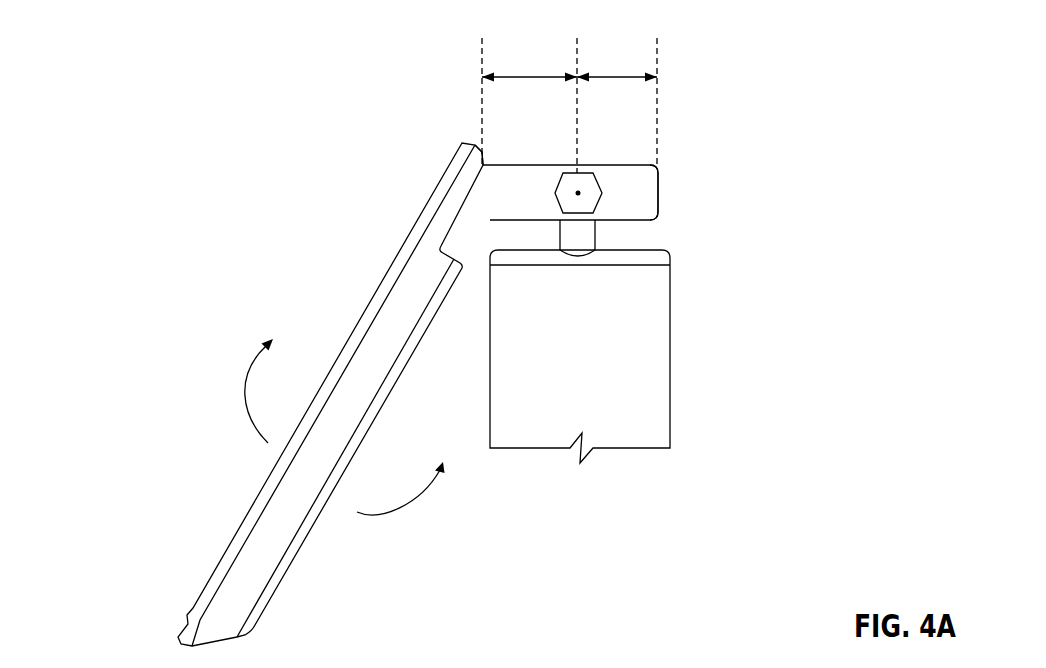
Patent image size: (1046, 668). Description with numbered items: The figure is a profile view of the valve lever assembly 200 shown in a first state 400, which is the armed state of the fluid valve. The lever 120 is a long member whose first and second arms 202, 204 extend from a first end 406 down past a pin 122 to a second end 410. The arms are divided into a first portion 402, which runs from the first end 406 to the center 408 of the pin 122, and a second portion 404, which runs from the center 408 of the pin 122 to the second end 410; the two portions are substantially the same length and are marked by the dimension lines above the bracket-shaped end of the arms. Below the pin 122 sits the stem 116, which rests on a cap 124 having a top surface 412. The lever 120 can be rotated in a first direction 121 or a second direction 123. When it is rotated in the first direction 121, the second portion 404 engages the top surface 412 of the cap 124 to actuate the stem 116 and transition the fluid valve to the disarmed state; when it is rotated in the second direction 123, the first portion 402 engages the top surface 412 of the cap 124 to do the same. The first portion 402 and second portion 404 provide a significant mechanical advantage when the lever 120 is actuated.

The valve lever assembly 200 is at (124, 60).
The first state 400 is at (789, 40).
The lever 120 is at (388, 270).
The first direction 121 is at (242, 391).
The second direction 123 is at (405, 513).
The pin 122 is at (556, 193).
The cap 124 is at (560, 363).
The stem 116 is at (578, 233).
The first arm 202 is at (622, 165).
The second arm 204 is at (644, 152).
The first portion 402 is at (535, 75).
The second portion 404 is at (620, 75).
The first end 406 is at (485, 160).
The center 408 is at (580, 193).
The second end 410 is at (659, 197).
The top surface 412 is at (641, 252).